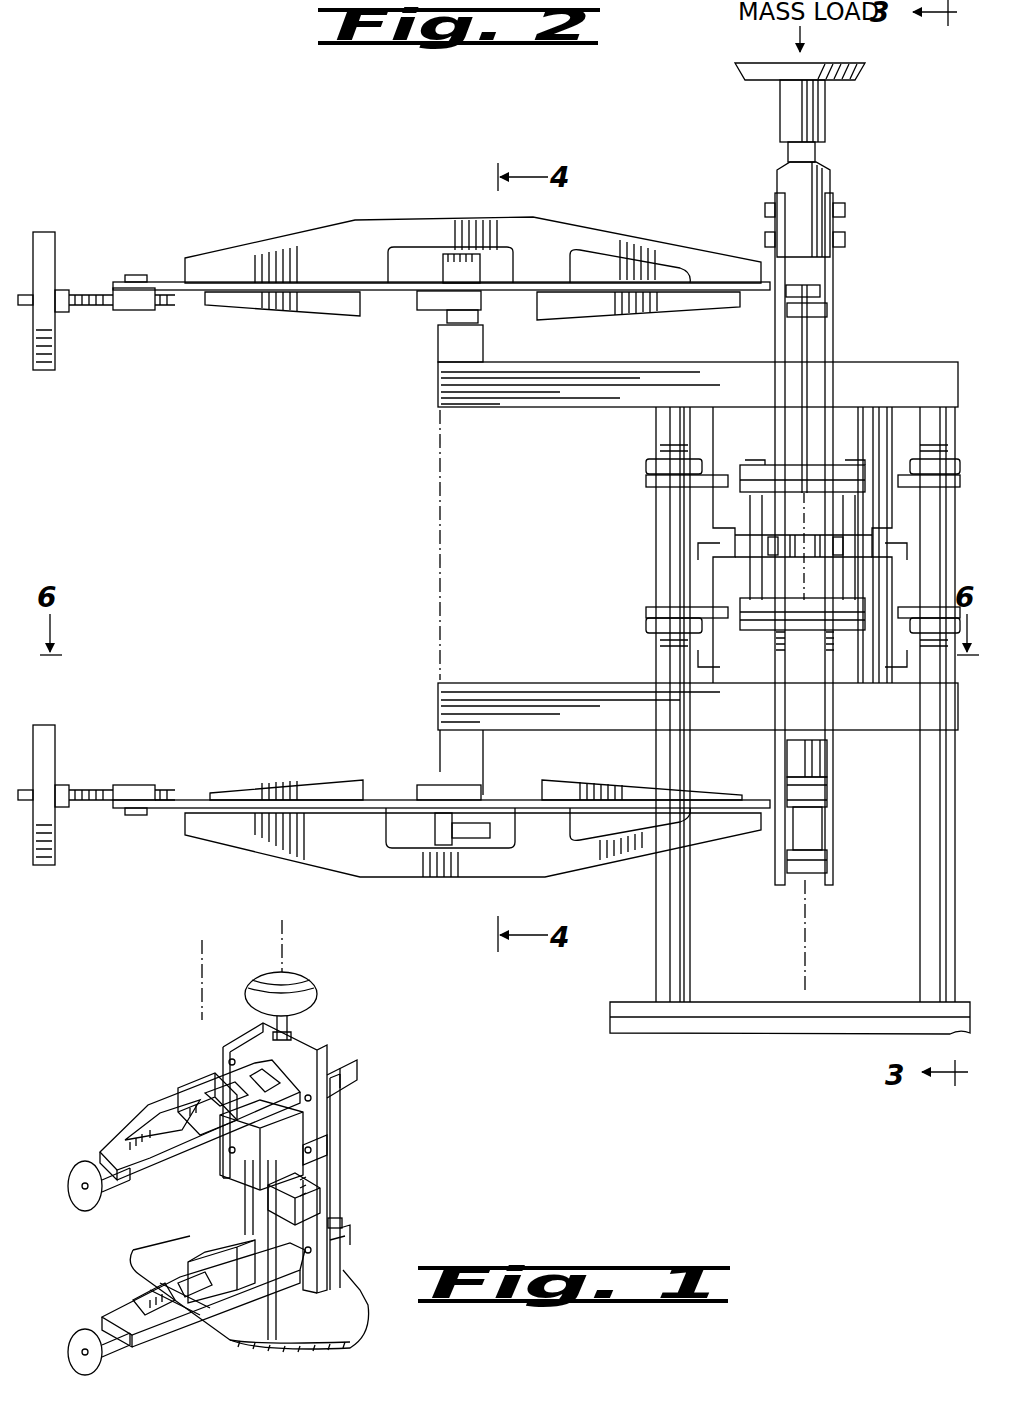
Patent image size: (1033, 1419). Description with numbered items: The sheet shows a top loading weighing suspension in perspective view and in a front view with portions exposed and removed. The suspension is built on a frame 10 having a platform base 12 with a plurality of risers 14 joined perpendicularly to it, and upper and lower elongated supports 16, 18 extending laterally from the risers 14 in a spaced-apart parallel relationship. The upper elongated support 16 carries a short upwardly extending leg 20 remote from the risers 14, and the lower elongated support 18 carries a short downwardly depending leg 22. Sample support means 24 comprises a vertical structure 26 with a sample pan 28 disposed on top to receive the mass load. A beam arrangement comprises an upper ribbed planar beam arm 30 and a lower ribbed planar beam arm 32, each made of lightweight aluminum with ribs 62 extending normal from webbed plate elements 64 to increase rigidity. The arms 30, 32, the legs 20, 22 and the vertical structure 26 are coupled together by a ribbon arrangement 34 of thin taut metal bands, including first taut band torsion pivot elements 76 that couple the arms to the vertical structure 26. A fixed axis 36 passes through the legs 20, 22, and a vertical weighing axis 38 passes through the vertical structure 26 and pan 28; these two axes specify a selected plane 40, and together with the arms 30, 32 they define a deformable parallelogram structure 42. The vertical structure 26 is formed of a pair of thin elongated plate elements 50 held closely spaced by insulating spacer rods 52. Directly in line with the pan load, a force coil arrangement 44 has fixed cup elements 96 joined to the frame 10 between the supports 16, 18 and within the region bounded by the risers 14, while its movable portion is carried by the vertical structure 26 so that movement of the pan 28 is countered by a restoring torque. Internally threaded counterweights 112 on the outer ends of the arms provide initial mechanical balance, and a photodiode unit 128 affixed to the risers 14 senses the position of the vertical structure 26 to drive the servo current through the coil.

In FIG. 2, the frame 10 is at (600, 992).
In FIG. 1, the frame 10 is at (358, 1290).
In FIG. 2, the platform base 12 is at (742, 1002).
In FIG. 1, the platform base 12 is at (372, 1315).
In FIG. 2, the risers 14 is at (660, 905).
In FIG. 1, the risers 14 is at (272, 1333).
In FIG. 2, the upper elongated support 16 is at (437, 395).
In FIG. 1, the upper elongated support 16 is at (355, 1084).
In FIG. 2, the lower elongated support 18 is at (437, 690).
In FIG. 1, the lower elongated support 18 is at (360, 1203).
In FIG. 2, the upwardly extending leg 20 is at (440, 366).
In FIG. 1, the upwardly extending leg 20 is at (210, 1167).
In FIG. 2, the downwardly depending leg 22 is at (440, 730).
In FIG. 1, the downwardly depending leg 22 is at (190, 1245).
In FIG. 2, the sample support means 24 is at (848, 348).
In FIG. 1, the sample support means 24 is at (311, 1141).
In FIG. 2, the vertical structure 26 is at (838, 325).
In FIG. 1, the vertical structure 26 is at (340, 1113).
In FIG. 2, the sample pan 28 is at (858, 82).
In FIG. 1, the sample pan 28 is at (317, 987).
In FIG. 2, the upper ribbed planar beam arm 30 is at (228, 278).
In FIG. 1, the upper ribbed planar beam arm 30 is at (122, 1127).
In FIG. 2, the lower ribbed planar beam arm 32 is at (268, 795).
In FIG. 1, the lower ribbed planar beam arm 32 is at (124, 1308).
In FIG. 2, the ribbon arrangement 34 is at (425, 318).
In FIG. 1, the ribbon arrangement 34 is at (197, 1112).
In FIG. 2, the fixed axis 36 is at (440, 556).
In FIG. 1, the fixed axis 36 is at (202, 990).
In FIG. 2, the vertical weighing axis 38 is at (805, 922).
In FIG. 1, the vertical weighing axis 38 is at (282, 930).
In FIG. 2, the selected plane 40 is at (462, 636).
In FIG. 1, the selected plane 40 is at (228, 950).
In FIG. 2, the deformable parallelogram structure 42 is at (650, 283).
In FIG. 2, the force coil arrangement 44 is at (712, 585).
In FIG. 2, the thin elongated plate elements 50 is at (800, 748).
In FIG. 1, the thin elongated plate elements 50 is at (342, 1152).
In FIG. 2, the insulating spacer rods 52 is at (795, 790).
In FIG. 1, the insulating spacer rods 52 is at (345, 1224).
In FIG. 2, the ribs 62 is at (322, 270).
In FIG. 2, the webbed plate elements 64 is at (198, 300).
In FIG. 2, the first taut band torsion pivot elements 76 is at (800, 348).
In FIG. 2, the cup elements 96 is at (690, 510).
In FIG. 2, the counterweights 112 is at (55, 235).
In FIG. 1, the photodiode unit 128 is at (352, 1236).